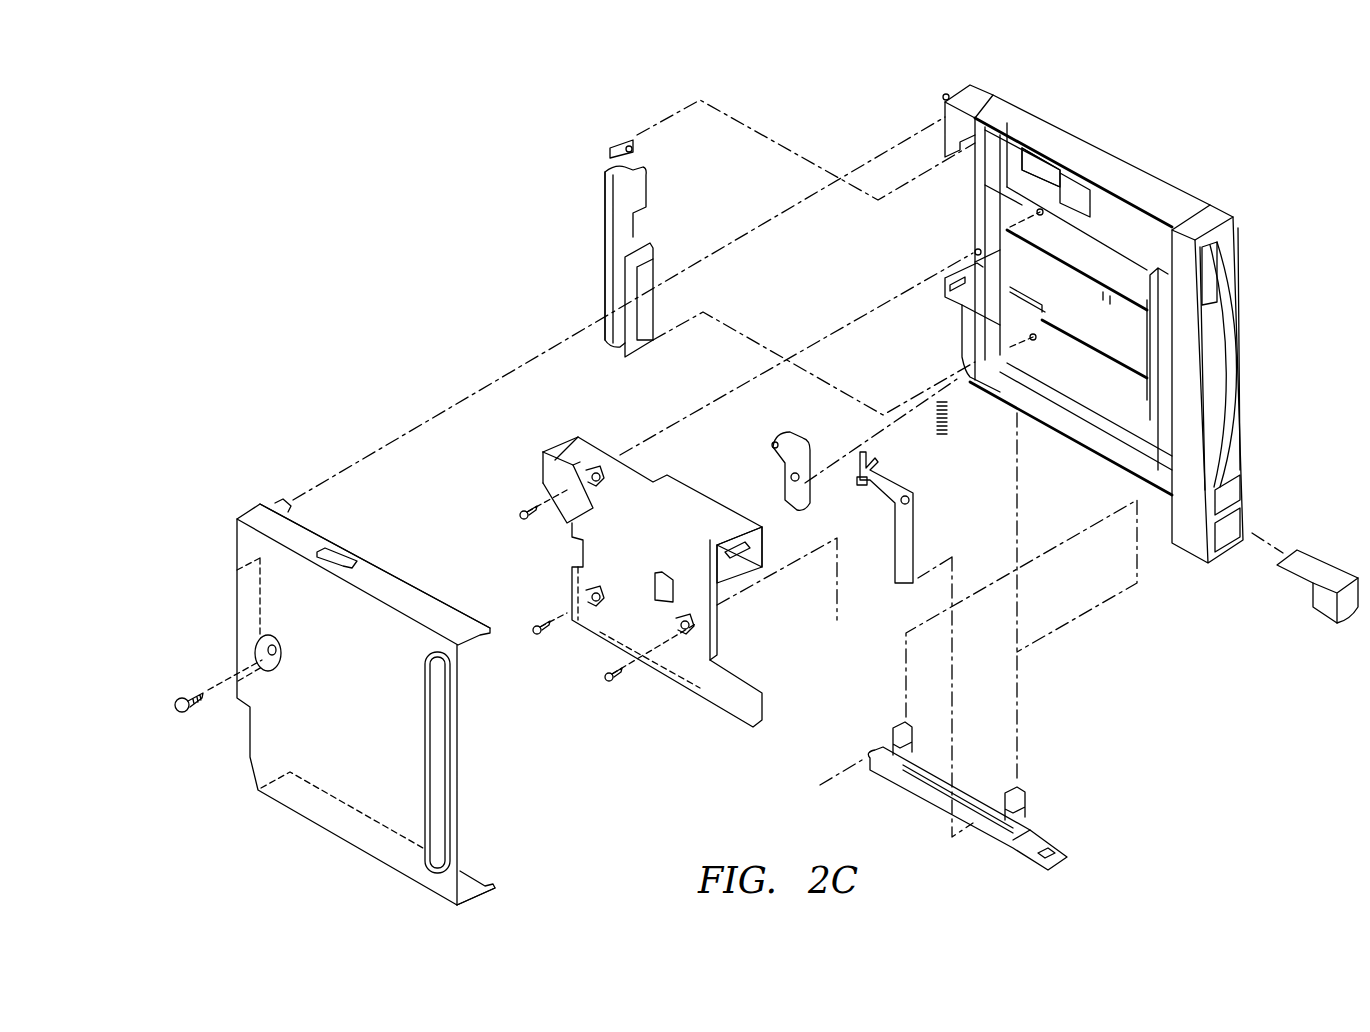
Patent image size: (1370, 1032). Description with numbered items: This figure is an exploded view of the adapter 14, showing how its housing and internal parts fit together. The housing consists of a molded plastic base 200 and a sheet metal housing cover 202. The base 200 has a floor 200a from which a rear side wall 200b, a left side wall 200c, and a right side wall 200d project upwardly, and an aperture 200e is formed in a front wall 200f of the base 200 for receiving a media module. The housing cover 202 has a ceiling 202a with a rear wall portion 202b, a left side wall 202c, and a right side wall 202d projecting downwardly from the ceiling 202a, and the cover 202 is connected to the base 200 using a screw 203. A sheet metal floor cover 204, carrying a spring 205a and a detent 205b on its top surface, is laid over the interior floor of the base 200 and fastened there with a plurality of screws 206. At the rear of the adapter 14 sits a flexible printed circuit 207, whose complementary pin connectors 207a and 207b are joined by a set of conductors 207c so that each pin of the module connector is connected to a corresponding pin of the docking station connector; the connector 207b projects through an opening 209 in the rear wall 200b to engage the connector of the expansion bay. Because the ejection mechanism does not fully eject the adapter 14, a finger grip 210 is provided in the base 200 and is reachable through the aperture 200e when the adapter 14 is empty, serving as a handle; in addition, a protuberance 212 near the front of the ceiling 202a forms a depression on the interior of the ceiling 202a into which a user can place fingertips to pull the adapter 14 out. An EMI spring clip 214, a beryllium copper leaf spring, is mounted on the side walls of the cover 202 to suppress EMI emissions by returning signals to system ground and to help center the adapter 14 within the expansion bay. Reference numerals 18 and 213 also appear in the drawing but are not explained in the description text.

The adapter 14 is at (1133, 682).
The latch handle 18 is at (1345, 578).
The base 200 is at (1177, 128).
The floor 200a is at (1127, 259).
The rear side wall 200b is at (969, 328).
The left side wall 200c is at (1177, 205).
The right side wall 200d is at (1105, 447).
The aperture 200e is at (1235, 400).
The front wall 200f is at (1219, 272).
The housing cover 202 is at (228, 811).
The ceiling 202a is at (362, 657).
The rear wall portion 202b is at (247, 598).
The left side wall 202c is at (402, 585).
The right side wall 202d is at (477, 898).
The screw 203 is at (178, 700).
The floor cover 204 is at (658, 536).
The spring 205a is at (543, 490).
The detent 205b is at (722, 522).
The screws 206 is at (515, 518).
The flexible printed circuit 207 is at (579, 165).
The pin connector 207a is at (636, 357).
The pin connector 207b is at (632, 146).
The conductors 207c is at (605, 280).
The opening 209 is at (968, 205).
The finger grip 210 is at (1167, 325).
The protuberance 212 is at (425, 708).
The pocket 213 is at (1033, 157).
The EMI spring clip 214 is at (335, 556).